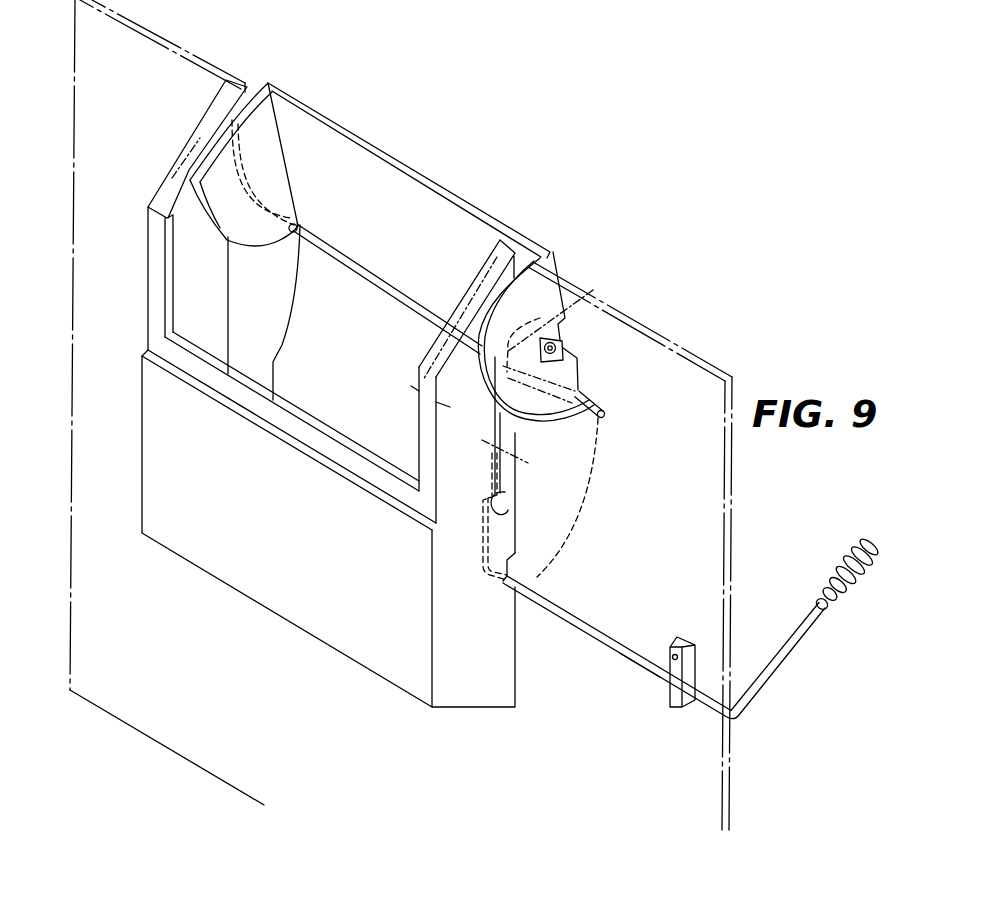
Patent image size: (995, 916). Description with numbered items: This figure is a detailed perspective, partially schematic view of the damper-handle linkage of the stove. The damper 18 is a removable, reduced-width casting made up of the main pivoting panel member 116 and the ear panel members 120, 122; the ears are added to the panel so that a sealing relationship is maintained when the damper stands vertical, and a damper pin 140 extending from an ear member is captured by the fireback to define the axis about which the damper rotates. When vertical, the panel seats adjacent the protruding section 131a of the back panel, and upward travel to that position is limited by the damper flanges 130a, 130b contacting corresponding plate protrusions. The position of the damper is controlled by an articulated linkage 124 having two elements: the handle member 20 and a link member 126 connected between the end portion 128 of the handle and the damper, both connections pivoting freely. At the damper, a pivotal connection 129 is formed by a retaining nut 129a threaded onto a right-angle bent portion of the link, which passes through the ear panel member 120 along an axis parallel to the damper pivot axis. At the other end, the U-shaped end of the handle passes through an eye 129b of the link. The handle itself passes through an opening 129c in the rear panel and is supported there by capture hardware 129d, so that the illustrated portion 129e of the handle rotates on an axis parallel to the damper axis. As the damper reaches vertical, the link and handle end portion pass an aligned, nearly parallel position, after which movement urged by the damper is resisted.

The damper 18 is at (442, 183).
The handle member 20 is at (790, 645).
The main pivoting panel member 116 is at (487, 212).
The ear panel member 120 is at (540, 296).
The ear panel member 122 is at (257, 113).
The articulated linkage 124 is at (602, 644).
The link member 126 is at (494, 432).
The end portion 128 is at (482, 506).
The pivotal connection 129 is at (591, 291).
The retaining nut 129a is at (562, 347).
The eye 129b is at (508, 497).
The opening 129c is at (510, 576).
The capture hardware 129d is at (670, 638).
The portion of handle 129e is at (643, 670).
The damper flange 130a is at (545, 423).
The damper flange 130b is at (190, 173).
The protruding section of back panel 131a is at (470, 690).
The damper pin 140 is at (603, 406).